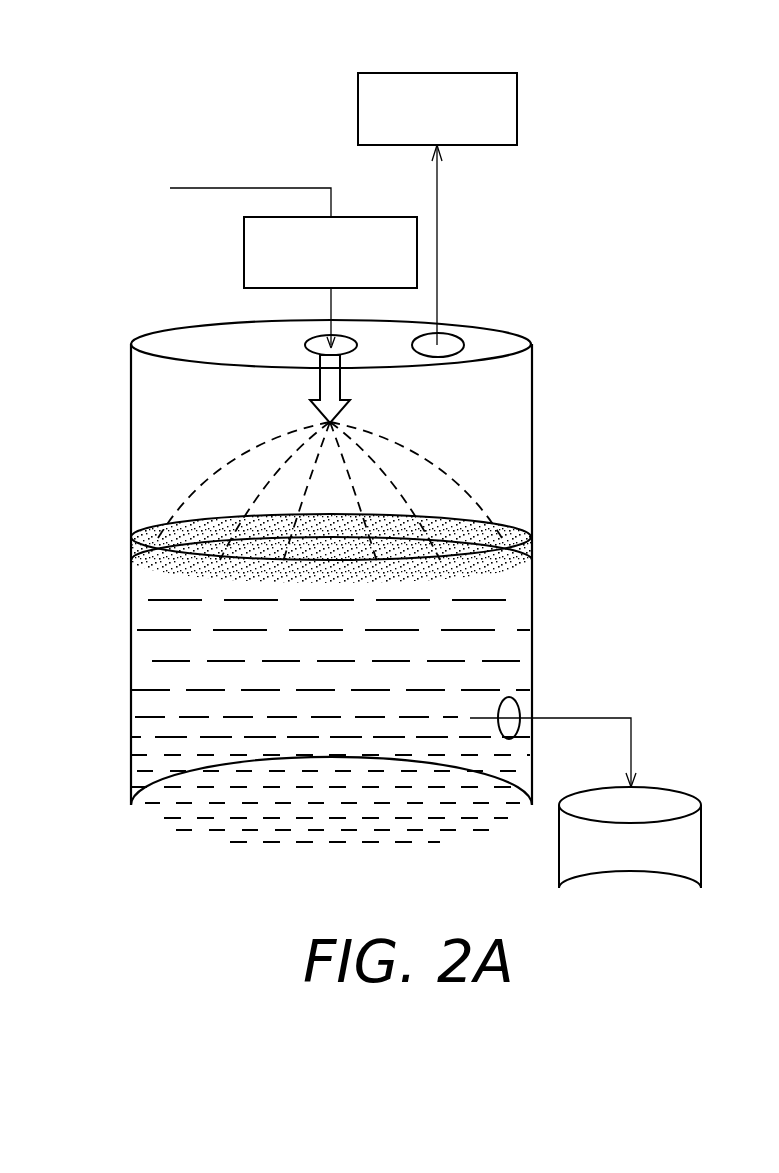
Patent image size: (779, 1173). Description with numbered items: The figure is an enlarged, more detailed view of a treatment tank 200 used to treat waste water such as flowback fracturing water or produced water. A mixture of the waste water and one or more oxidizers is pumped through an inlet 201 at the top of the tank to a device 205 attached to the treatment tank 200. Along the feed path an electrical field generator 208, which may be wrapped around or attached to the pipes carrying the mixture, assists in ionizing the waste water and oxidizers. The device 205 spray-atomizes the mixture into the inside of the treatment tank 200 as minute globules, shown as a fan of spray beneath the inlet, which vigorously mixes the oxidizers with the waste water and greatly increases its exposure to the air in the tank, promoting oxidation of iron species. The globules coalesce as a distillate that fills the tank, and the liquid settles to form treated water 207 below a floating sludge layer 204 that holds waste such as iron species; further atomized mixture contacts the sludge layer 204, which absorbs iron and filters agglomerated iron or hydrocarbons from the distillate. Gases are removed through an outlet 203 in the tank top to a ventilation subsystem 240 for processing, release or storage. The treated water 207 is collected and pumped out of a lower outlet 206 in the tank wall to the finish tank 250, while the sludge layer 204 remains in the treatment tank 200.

The treatment tank 200 is at (552, 163).
The inlet 201 is at (307, 340).
The outlet 203 is at (452, 335).
The sludge layer 204 is at (502, 527).
The device 205 is at (318, 379).
The lower outlet 206 is at (517, 702).
The treated water 207 is at (247, 805).
The electrical field generator 208 is at (244, 238).
The ventilation subsystem 240 is at (358, 122).
The finish tank 250 is at (657, 787).